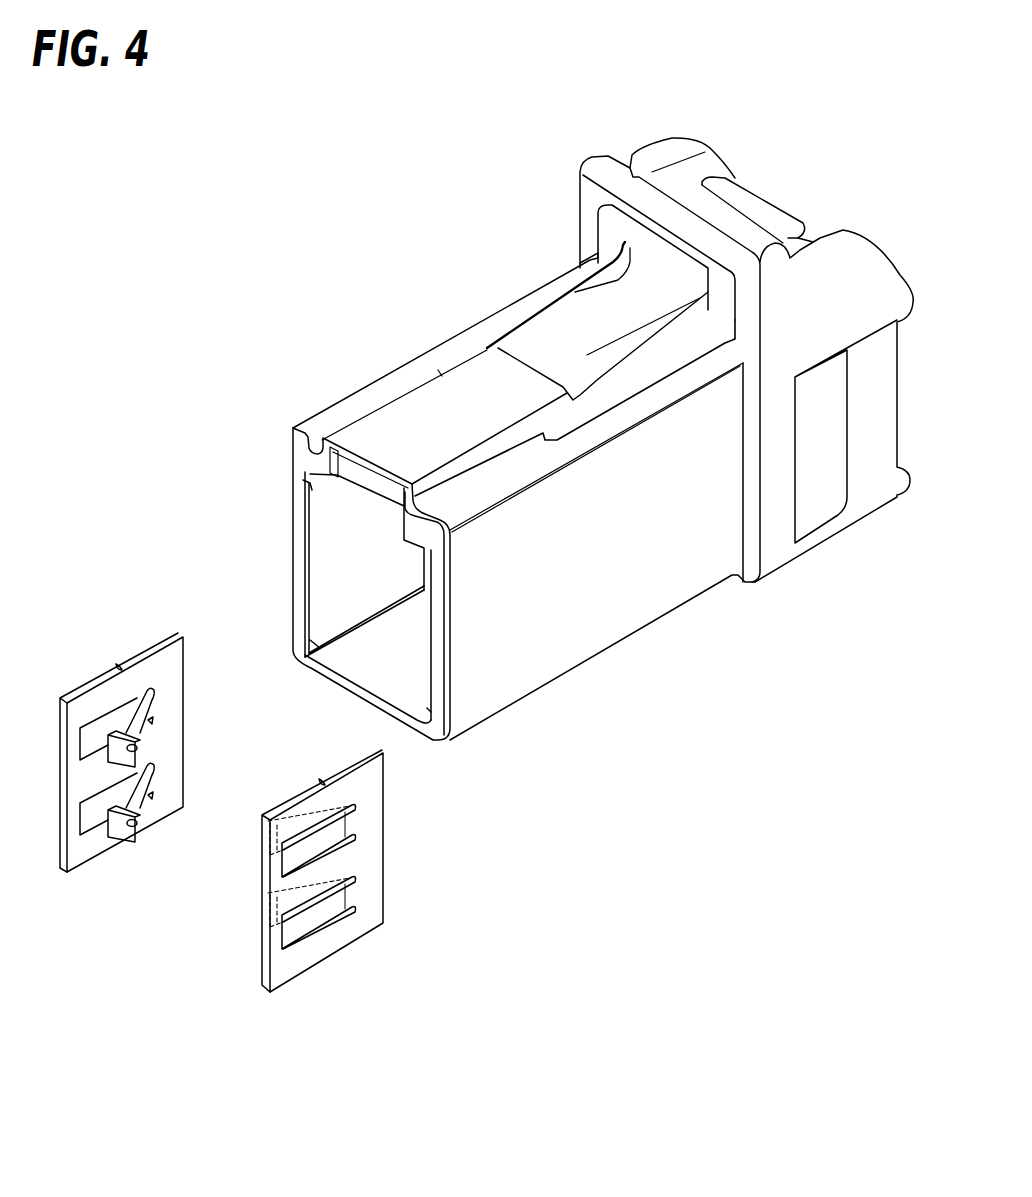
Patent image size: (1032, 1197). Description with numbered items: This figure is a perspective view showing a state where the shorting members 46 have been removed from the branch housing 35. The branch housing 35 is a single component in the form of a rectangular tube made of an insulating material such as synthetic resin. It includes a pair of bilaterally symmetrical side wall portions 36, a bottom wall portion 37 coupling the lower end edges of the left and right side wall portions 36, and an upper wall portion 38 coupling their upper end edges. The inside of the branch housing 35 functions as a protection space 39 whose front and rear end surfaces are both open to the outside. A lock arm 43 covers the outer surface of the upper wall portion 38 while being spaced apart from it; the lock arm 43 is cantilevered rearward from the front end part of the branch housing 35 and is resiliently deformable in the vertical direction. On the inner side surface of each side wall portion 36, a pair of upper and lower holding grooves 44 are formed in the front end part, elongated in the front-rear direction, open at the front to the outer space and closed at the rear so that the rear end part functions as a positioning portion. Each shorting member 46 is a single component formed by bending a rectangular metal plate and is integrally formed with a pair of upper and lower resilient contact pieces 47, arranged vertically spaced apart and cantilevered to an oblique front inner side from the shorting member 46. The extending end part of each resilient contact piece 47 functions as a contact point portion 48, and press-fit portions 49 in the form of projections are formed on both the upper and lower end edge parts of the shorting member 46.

The branch housing 35 is at (377, 378).
The side wall portions 36 is at (335, 533).
The bottom wall portion 37 is at (413, 676).
The upper wall portion 38 is at (515, 473).
The protection space 39 is at (343, 583).
The lock arm 43 is at (557, 336).
The holding grooves 44 is at (307, 488).
The shorting member 46 is at (87, 850).
The resilient contact pieces 47 is at (115, 820).
The contact point portion 48 is at (138, 748).
The press-fit portions 49 is at (120, 665).